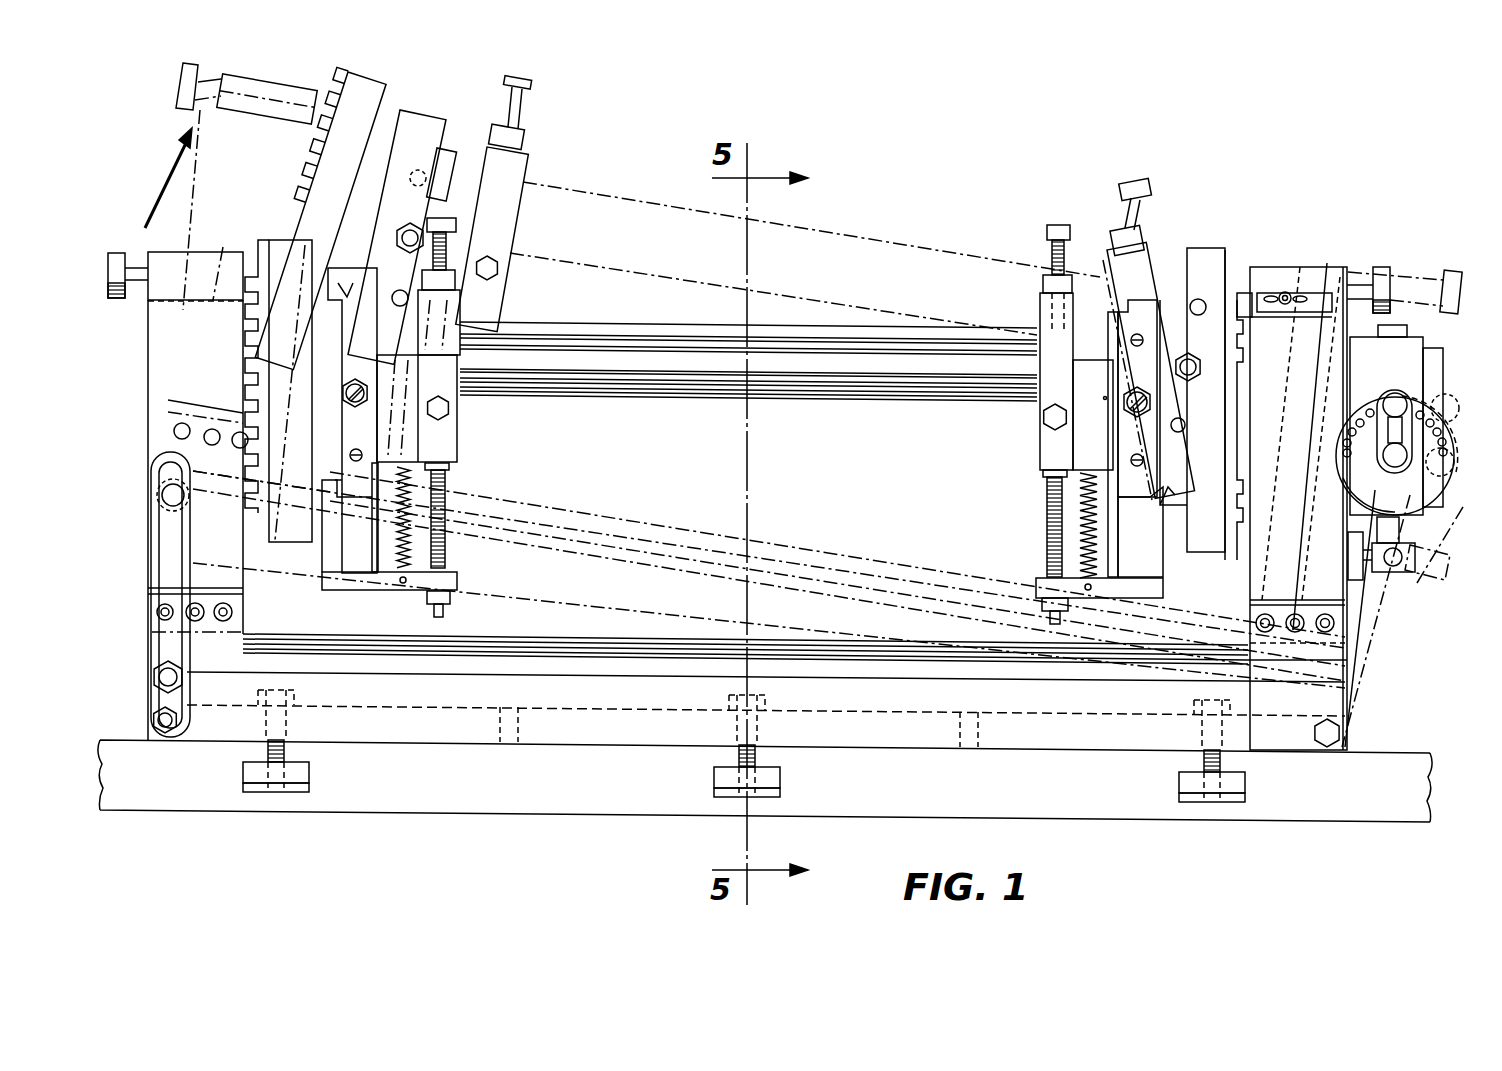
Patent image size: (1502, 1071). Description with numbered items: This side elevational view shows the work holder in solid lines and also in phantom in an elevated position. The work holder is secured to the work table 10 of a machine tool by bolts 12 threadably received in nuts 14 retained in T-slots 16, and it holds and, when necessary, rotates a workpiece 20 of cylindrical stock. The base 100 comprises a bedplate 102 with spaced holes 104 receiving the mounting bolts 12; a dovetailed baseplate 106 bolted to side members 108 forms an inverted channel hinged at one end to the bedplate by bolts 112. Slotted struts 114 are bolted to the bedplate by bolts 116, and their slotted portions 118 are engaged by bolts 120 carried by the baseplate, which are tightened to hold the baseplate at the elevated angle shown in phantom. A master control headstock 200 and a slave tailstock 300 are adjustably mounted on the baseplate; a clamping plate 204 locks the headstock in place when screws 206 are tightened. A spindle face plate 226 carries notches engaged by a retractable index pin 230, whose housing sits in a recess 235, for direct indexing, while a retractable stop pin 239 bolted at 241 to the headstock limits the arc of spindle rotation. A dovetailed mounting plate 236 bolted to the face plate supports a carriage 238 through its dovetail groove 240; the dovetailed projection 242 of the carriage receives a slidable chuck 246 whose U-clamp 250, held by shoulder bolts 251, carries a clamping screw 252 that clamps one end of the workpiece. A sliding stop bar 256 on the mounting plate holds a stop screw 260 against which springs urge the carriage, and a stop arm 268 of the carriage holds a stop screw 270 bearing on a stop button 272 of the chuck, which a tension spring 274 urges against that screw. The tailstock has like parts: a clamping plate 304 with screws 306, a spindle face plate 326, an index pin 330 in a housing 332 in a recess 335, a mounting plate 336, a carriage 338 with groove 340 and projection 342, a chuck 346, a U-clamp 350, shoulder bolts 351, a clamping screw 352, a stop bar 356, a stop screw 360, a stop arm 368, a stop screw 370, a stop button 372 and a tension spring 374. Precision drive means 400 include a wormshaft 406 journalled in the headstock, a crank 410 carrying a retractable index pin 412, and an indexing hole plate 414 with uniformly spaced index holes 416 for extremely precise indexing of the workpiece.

The work table 10 is at (496, 822).
The bolts 12 is at (286, 752).
The nuts 14 is at (243, 775).
The T-slots 16 is at (290, 790).
The workpiece 20 is at (613, 186).
The base 100 is at (666, 630).
The bedplate 102 is at (655, 735).
The holes 104 is at (262, 705).
The dovetailed baseplate 106 is at (822, 646).
The side members 108 is at (915, 738).
The bolts 112 is at (1343, 725).
The slotted struts 114 is at (152, 573).
The bolts 116 is at (152, 718).
The slotted portions 118 is at (162, 535).
The bolts 120 is at (152, 676).
The master control headstock 200 is at (1340, 260).
The clamping plate 204 is at (1335, 637).
The screws 206 is at (1325, 615).
The spindle face plate 226 is at (1206, 250).
The index pin 230 is at (1294, 268).
The recess 235 is at (1319, 446).
The dovetailed mounting plate 236 is at (1173, 282).
The carriage 238 is at (1157, 557).
The stop pin 239 is at (1250, 312).
The dovetail groove 240 is at (1162, 503).
The bolt 241 is at (1283, 292).
The dovetailed projection 242 is at (1108, 592).
The slidable chuck 246 is at (1087, 403).
The U-clamp 250 is at (1040, 308).
The shoulder bolts 251 is at (1043, 414).
The clamping screw 252 is at (1053, 226).
The sliding stop bar 256 is at (1128, 286).
The stop screw 260 is at (1152, 402).
The stop arm 268 is at (1040, 591).
The stop screw 270 is at (1047, 532).
The stop button 272 is at (1043, 482).
The tension spring 274 is at (1080, 555).
The slave tailstock 300 is at (144, 376).
The clamping plate 304 is at (235, 628).
The screws 306 is at (215, 606).
The spindle face plate 326 is at (286, 242).
The index pin 330 is at (114, 252).
The housing 332 is at (166, 252).
The recess 335 is at (216, 300).
The dovetailed mounting plate 336 is at (323, 272).
The carriage 338 is at (333, 545).
The dovetail groove 340 is at (334, 488).
The dovetailed projection 342 is at (375, 575).
The slidable chuck 346 is at (407, 438).
The U-clamp 350 is at (463, 303).
The shoulder bolts 351 is at (468, 412).
The clamping screw 352 is at (457, 224).
The sliding stop bar 356 is at (350, 288).
The stop screw 360 is at (340, 392).
The stop arm 368 is at (458, 588).
The stop screw 370 is at (447, 550).
The stop button 372 is at (449, 470).
The tension spring 374 is at (410, 520).
The precision drive means 400 is at (1336, 481).
The wormshaft 406 is at (1397, 465).
The crank 410 is at (1345, 468).
The index pin 412 is at (1384, 403).
The indexing hole plate 414 is at (1448, 488).
The index holes 416 is at (1352, 447).